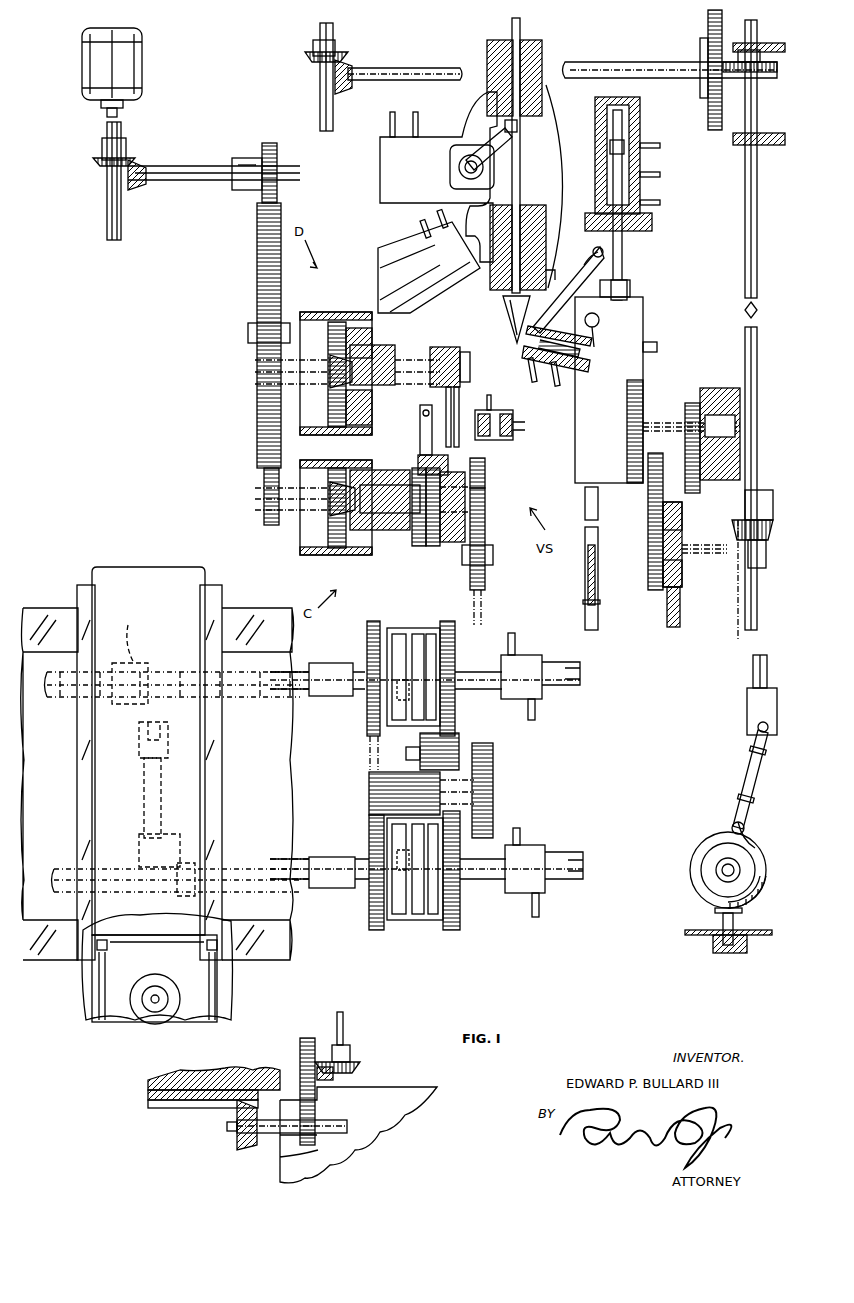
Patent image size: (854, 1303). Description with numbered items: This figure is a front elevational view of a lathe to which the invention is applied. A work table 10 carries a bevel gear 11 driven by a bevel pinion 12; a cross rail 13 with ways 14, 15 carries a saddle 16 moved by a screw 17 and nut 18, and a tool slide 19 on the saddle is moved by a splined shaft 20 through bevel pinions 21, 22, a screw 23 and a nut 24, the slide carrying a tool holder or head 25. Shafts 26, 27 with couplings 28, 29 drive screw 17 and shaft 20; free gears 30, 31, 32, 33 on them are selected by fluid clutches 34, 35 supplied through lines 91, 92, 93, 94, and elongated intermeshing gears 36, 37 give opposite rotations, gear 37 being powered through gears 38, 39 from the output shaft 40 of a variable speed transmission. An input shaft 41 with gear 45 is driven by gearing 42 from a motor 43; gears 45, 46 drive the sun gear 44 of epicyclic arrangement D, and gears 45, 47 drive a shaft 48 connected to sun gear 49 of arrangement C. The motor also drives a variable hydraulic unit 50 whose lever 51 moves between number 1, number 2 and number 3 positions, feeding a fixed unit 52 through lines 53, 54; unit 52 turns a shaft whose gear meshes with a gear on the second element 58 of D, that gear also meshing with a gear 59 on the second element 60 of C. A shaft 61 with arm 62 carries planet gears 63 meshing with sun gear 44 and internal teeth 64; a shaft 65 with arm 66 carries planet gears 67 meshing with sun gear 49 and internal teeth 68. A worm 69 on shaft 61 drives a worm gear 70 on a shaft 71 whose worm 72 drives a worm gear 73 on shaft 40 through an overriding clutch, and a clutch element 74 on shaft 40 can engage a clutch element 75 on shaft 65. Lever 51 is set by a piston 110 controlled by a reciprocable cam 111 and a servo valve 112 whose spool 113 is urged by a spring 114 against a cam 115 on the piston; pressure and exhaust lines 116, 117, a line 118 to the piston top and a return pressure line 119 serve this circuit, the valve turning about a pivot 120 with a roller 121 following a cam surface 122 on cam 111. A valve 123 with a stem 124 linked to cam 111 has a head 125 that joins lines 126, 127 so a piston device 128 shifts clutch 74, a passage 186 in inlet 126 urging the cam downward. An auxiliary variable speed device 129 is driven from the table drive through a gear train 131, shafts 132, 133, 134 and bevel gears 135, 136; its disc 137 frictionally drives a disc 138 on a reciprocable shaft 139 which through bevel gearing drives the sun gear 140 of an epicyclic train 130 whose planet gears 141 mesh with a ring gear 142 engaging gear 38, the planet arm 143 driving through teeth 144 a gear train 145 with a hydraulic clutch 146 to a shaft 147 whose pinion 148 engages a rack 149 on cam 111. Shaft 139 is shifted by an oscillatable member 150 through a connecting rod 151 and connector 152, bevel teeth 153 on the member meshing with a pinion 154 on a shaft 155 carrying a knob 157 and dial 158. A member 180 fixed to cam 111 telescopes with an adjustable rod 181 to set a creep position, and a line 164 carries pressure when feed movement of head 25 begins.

The number 1 position 1 is at (520, 130).
The number 2 position 2 is at (484, 167).
The number 3 position 3 is at (478, 172).
The work supporting table 10 is at (218, 1076).
The bevel gear 11 is at (260, 1103).
The bevel pinion 12 is at (243, 1150).
The cross rail 13 is at (258, 758).
The way 14 is at (268, 608).
The way 15 is at (270, 950).
The saddle 16 is at (222, 797).
The screw 17 is at (254, 694).
The non-rotatable nut 18 is at (148, 751).
The tool slide 19 is at (140, 912).
The splined shaft 20 is at (268, 858).
The bevel pinion 21 is at (192, 862).
The bevel pinion 22 is at (140, 846).
The screw 23 is at (146, 796).
The nut 24 is at (170, 750).
The tool holder 25 is at (82, 994).
The shaft 26 is at (360, 696).
The shaft 27 is at (362, 888).
The coupling 28 is at (330, 662).
The coupling 29 is at (338, 854).
The gear 30 is at (374, 608).
The gear 31 is at (454, 608).
The gear 32 is at (378, 932).
The gear 33 is at (452, 930).
The fluid-operated clutch 34 is at (411, 614).
The fluid-operated clutch 35 is at (405, 950).
The elongated gear 36 is at (418, 742).
The elongated gear 37 is at (372, 782).
The gear 38 is at (682, 618).
The gear 39 is at (486, 527).
The output shaft 40 is at (485, 478).
The input shaft 41 is at (250, 328).
The gearing 42 is at (140, 150).
The motor 43 is at (135, 60).
The sun gear 44 is at (322, 392).
The gear 45 is at (258, 285).
The gear 46 is at (262, 370).
The gear 47 is at (262, 530).
The shaft 48 is at (290, 516).
The sun gear 49 is at (335, 510).
The variable volume hydraulic unit 50 is at (433, 181).
The lever 51 is at (510, 134).
The non-variable hydraulic unit 52 is at (420, 298).
The line 53 is at (388, 124).
The line 54 is at (416, 112).
The second element 58 is at (294, 310).
The gear 59 is at (380, 555).
The second element 60 is at (345, 555).
The shaft 61 is at (418, 355).
The arm 62 is at (372, 350).
The planet gear 63 is at (328, 344).
The internal gear teeth 64 is at (318, 312).
The shaft 65 is at (372, 478).
The arm 66 is at (372, 525).
The planet gear 67 is at (330, 466).
The internal gear teeth 68 is at (320, 552).
The worm 69 is at (445, 345).
The worm gear 70 is at (468, 350).
The shaft 71 is at (460, 405).
The worm 72 is at (428, 445).
The worm gear 73 is at (450, 542).
The clutch element 74 is at (430, 546).
The clutch element 75 is at (415, 546).
The outlet line 91 is at (520, 828).
The outlet line 92 is at (540, 906).
The outlet line 93 is at (515, 633).
The outlet line 94 is at (537, 712).
The piston 110 is at (542, 60).
The cam 111 is at (609, 466).
The servo valve 112 is at (566, 312).
The spool 113 is at (522, 348).
The spring 114 is at (575, 334).
The cam 115 is at (502, 307).
The constant pressure line 116 is at (528, 378).
The exhaust line 117 is at (558, 386).
The line 118 is at (521, 26).
The constant pressure line 119 is at (556, 252).
The pivot 120 is at (579, 255).
The cam roller 121 is at (632, 300).
The cam surface 122 is at (645, 340).
The valve 123 is at (681, 115).
The valve stem 124 is at (612, 190).
The head 125 is at (612, 160).
The line 126 is at (652, 143).
The line 127 is at (520, 432).
The piston device 128 is at (500, 410).
The auxiliary variable speed device 129 is at (718, 145).
The epicyclic gearing train 130 is at (644, 563).
The gear train 131 is at (320, 1010).
The shaft 132 is at (345, 1024).
The shaft 133 is at (319, 99).
The shaft 134 is at (440, 68).
The bevel gear 135 is at (310, 48).
The bevel gear 136 is at (355, 62).
The flat disc 137 is at (708, 28).
The disc 138 is at (778, 80).
The reciprocable shaft 139 is at (758, 178).
The sun gear 140 is at (684, 526).
The planet gear 141 is at (684, 508).
The ring gear 142 is at (682, 596).
The arm 143 is at (646, 540).
The gear teeth 144 is at (660, 590).
The gear train 145 is at (684, 408).
The hydraulically operable clutch 146 is at (713, 386).
The shaft 147 is at (650, 400).
The pinion 148 is at (640, 430).
The rack 149 is at (643, 370).
The oscillatable member 150 is at (752, 850).
The connecting rod 151 is at (746, 772).
The non-rotatable connector 152 is at (746, 705).
The bevel gear teeth 153 is at (768, 870).
The bevel pinion 154 is at (713, 912).
The shaft 155 is at (735, 922).
The knob 157 is at (714, 952).
The dial 158 is at (686, 935).
The line 164 is at (775, 490).
The member 180 is at (583, 496).
The rod 181 is at (582, 610).
The passage 186 is at (630, 112).